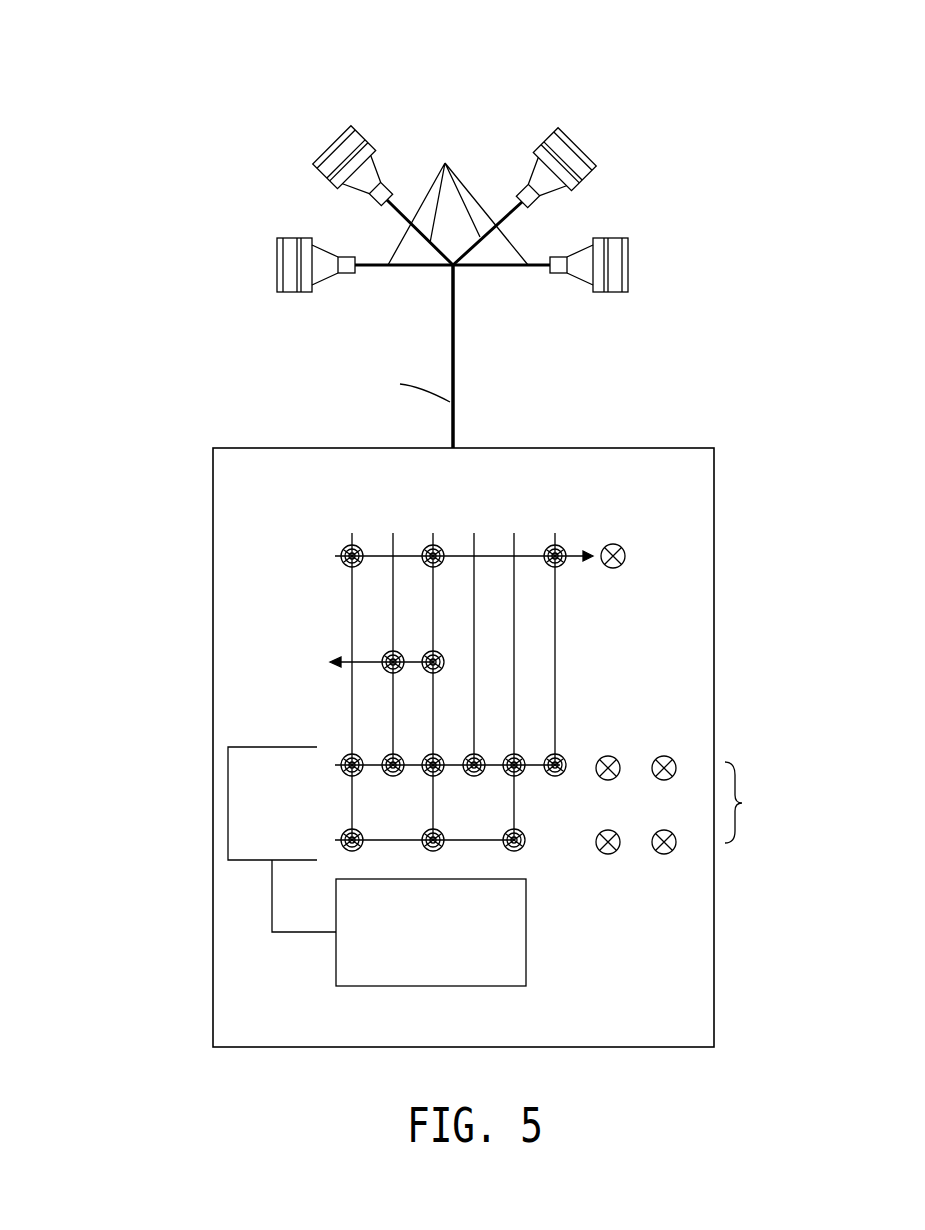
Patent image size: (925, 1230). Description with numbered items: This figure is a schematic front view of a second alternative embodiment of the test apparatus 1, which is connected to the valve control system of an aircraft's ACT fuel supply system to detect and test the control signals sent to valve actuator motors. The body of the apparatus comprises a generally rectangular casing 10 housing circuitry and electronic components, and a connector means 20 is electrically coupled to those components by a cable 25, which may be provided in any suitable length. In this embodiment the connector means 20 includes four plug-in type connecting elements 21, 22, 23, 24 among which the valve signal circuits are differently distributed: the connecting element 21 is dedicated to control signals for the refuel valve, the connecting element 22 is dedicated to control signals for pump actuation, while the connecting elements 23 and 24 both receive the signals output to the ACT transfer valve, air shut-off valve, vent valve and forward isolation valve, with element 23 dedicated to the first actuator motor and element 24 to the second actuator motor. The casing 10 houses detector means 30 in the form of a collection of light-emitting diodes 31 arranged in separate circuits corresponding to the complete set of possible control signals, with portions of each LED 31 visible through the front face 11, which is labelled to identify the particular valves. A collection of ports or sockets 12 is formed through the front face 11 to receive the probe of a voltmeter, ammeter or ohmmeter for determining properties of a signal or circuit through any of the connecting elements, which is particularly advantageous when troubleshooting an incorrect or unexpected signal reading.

The test apparatus 1 is at (128, 82).
The casing 10 is at (213, 968).
The front face 11 is at (690, 953).
The ports or sockets 12 is at (345, 548).
The connector means 20 is at (637, 170).
The connecting element 21 is at (277, 262).
The connecting element 22 is at (347, 138).
The connecting element 23 is at (573, 138).
The connecting element 24 is at (627, 253).
The cable 25 is at (455, 362).
The detector means 30 is at (686, 709).
The light-emitting diodes 31 is at (630, 556).